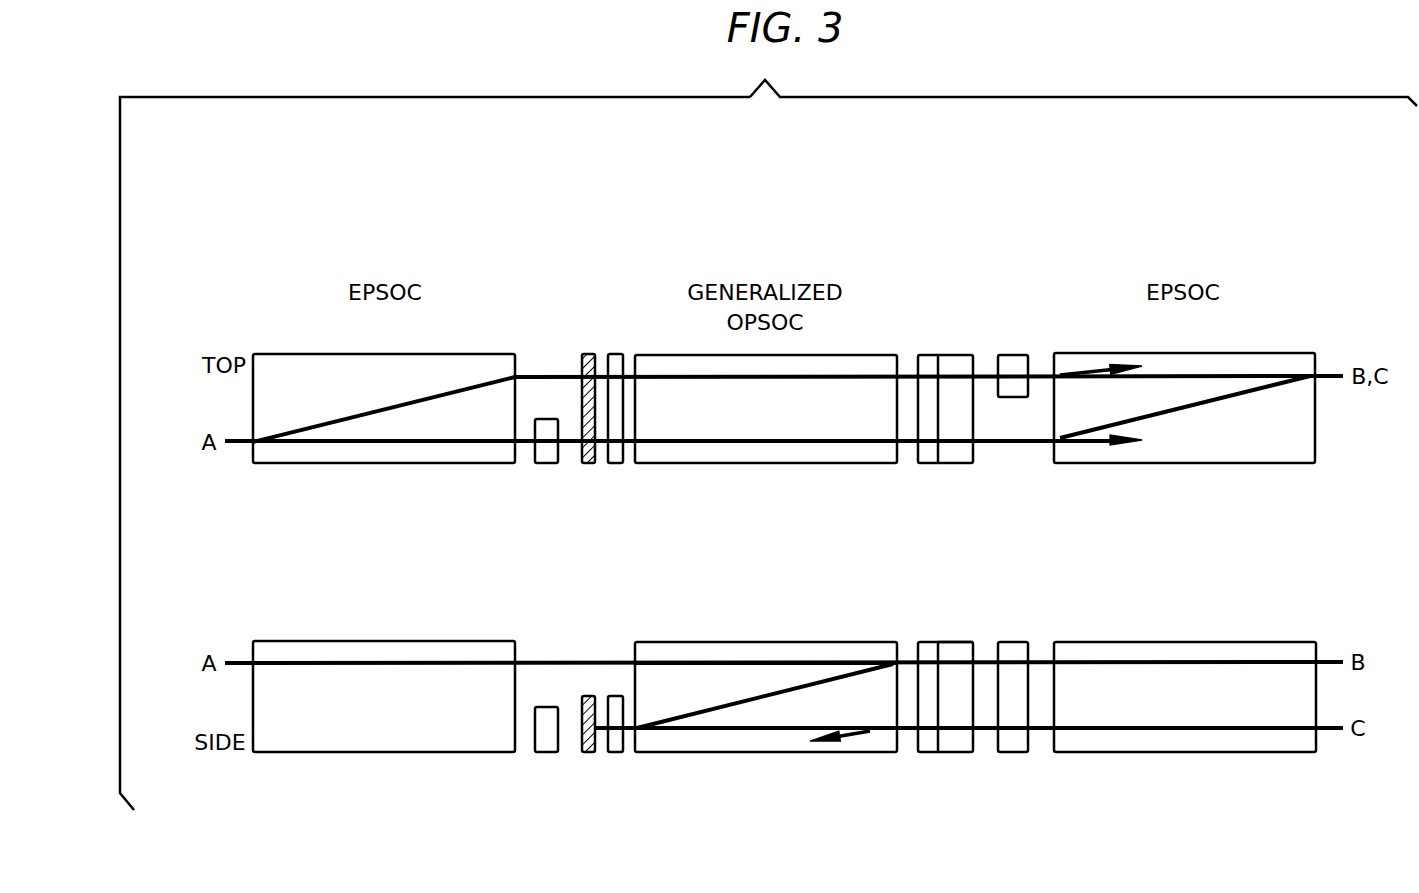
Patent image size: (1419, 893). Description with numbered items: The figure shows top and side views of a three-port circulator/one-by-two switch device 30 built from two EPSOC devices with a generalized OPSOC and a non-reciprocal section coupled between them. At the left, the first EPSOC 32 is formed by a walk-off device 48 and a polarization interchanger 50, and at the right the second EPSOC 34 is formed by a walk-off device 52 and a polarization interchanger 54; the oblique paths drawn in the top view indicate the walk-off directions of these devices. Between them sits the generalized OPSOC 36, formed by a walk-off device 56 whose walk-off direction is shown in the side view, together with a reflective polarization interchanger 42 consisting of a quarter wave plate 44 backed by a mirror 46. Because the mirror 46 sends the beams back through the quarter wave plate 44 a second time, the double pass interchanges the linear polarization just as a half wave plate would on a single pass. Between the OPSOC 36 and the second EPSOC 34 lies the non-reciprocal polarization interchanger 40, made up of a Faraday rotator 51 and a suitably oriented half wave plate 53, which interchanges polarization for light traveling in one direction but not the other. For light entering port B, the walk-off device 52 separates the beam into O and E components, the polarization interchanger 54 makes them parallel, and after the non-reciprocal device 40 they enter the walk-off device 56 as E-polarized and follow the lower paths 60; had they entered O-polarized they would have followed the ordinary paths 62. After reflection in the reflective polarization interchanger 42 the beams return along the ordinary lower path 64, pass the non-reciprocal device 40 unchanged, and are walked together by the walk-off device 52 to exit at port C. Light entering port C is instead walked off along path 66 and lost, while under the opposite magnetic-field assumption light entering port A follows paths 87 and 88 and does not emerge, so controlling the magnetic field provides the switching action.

The 3-port circulator/switch device 30 is at (206, 189).
The first EPSOC 32 is at (557, 252).
The second EPSOC 34 is at (997, 252).
The generalized OPSOC 36 is at (585, 252).
The non-reciprocal polarization interchanger 40 is at (915, 252).
The reflective polarization interchanger 42 is at (623, 763).
The quarter wave plate 44 is at (616, 465).
The mirror 46 is at (585, 354).
The walk-off device 48 is at (463, 354).
The polarization interchanger 50 is at (548, 465).
The Faraday rotator 51 is at (928, 753).
The walk-off device 52 is at (1235, 465).
The half wave plate 53 is at (950, 640).
The polarization interchanger 54 is at (1012, 355).
The walk-off device 56 is at (868, 354).
The lower paths 60 is at (715, 706).
The ordinary paths 62 is at (782, 662).
The ordinary (lower) path 64 is at (808, 727).
The path 66 is at (856, 735).
The path 87 is at (1096, 443).
The path 88 is at (1096, 368).